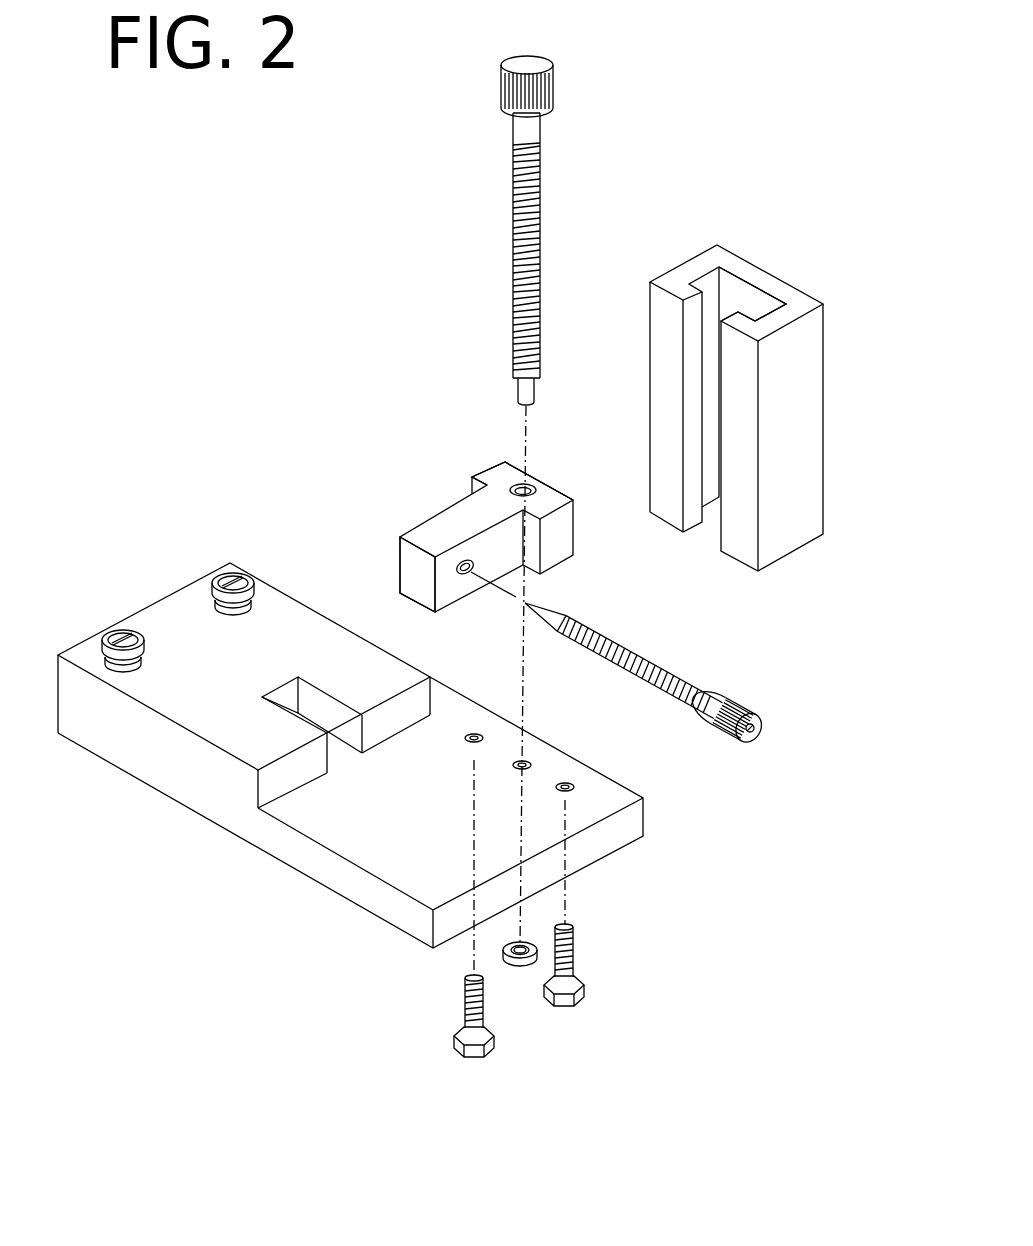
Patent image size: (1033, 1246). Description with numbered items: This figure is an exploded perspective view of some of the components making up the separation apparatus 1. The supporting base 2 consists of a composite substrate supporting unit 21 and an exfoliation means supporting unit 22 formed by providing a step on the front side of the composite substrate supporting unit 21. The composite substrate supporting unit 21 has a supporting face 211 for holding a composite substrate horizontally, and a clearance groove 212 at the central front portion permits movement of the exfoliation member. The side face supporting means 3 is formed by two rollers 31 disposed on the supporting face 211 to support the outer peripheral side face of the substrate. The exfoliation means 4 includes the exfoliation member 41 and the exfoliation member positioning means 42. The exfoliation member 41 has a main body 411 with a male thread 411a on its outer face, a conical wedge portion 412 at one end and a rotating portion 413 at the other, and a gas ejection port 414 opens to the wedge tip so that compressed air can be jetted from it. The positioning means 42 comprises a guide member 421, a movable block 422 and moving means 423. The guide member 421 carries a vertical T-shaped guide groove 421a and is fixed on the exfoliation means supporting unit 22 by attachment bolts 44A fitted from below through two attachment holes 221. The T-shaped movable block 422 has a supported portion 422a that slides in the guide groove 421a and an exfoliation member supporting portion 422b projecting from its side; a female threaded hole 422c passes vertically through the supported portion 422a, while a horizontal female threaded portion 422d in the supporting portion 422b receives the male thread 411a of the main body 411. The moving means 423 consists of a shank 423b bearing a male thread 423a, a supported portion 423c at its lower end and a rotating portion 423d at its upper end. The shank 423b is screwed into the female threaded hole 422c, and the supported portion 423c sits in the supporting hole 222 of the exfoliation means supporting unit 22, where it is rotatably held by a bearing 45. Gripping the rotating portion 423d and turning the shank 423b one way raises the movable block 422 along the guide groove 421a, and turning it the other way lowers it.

The separation apparatus 1 is at (250, 302).
The supporting base 2 is at (262, 569).
The side face supporting means 3 is at (140, 620).
The roller 31 is at (224, 574).
The exfoliation means 4 is at (642, 115).
The exfoliation member 41 is at (672, 640).
The exfoliation member main body 411 is at (680, 673).
The male thread 411a is at (701, 685).
The conical wedge portion 412 is at (562, 618).
The rotating portion 413 is at (768, 722).
The gas ejection port 414 is at (752, 735).
The exfoliation member positioning means 42 is at (655, 222).
The guide member 421 is at (757, 255).
The T-shaped guide groove 421a is at (742, 294).
The movable block 422 is at (442, 489).
The supported portion 422a is at (496, 474).
The exfoliation member supporting portion 422b is at (430, 535).
The female threaded hole 422c is at (530, 486).
The female threaded portion 422d is at (469, 578).
The moving means 423 is at (555, 256).
The male thread 423a is at (515, 236).
The shank 423b is at (515, 180).
The supported portion 423c is at (518, 391).
The rotating portion 423d is at (528, 68).
The composite substrate supporting unit 21 is at (112, 775).
The supporting face 211 is at (205, 716).
The clearance groove 212 is at (290, 700).
The exfoliation means supporting unit 22 is at (383, 926).
The attachment hole 221 is at (478, 734).
The supporting hole 222 is at (524, 761).
The attachment bolt 44A is at (477, 1050).
The bearing 45 is at (521, 966).